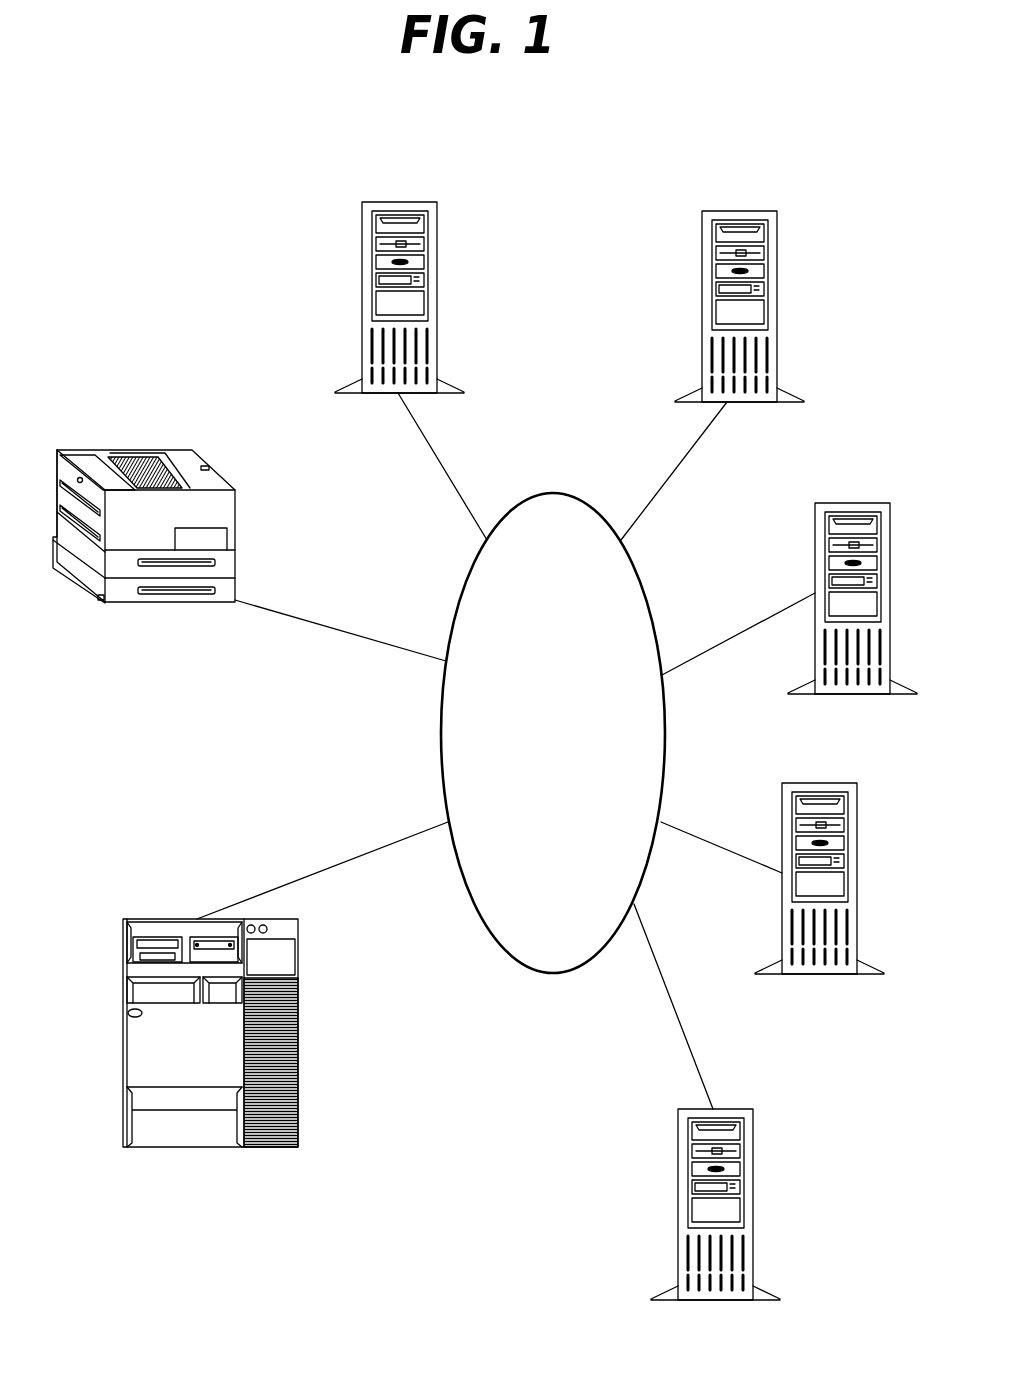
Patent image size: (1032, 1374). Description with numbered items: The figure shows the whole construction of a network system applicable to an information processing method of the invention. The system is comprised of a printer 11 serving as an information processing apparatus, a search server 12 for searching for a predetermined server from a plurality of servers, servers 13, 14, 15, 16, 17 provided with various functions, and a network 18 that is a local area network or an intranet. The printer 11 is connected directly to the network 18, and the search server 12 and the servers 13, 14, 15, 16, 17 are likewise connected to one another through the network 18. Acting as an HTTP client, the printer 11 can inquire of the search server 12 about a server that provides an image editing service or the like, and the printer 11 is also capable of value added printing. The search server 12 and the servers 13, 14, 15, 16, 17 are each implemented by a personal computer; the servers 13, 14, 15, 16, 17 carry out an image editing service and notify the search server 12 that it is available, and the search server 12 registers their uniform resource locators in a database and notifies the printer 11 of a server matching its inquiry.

The printer 11 is at (94, 450).
The search server 12 is at (157, 919).
The server 13 is at (413, 202).
The server 14 is at (757, 211).
The server 15 is at (867, 503).
The server 16 is at (838, 783).
The server 17 is at (753, 1133).
The network 18 is at (441, 757).